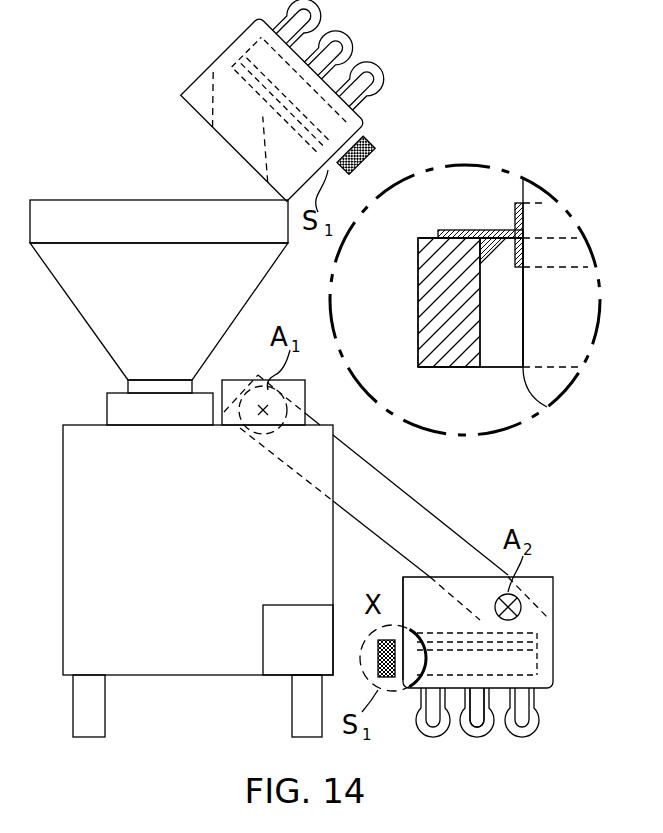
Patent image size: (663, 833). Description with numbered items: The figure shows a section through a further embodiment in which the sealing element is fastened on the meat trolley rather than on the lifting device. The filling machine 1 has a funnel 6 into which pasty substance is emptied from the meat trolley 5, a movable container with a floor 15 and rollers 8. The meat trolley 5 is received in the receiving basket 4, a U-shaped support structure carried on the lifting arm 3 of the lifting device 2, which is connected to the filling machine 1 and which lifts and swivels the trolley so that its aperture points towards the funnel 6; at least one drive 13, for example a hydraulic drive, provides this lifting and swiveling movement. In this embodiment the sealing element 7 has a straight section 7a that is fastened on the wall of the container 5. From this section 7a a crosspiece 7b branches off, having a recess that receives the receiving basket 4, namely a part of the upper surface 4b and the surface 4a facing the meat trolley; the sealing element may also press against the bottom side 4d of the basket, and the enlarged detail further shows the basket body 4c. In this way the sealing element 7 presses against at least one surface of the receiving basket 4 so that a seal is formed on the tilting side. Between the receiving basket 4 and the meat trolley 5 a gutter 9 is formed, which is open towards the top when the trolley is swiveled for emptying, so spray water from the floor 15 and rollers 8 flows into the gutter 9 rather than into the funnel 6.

The filling machine 1 is at (88, 186).
The lifting device 2 is at (437, 522).
The lifting arm 3 is at (382, 529).
The receiving basket 4 is at (398, 692).
The side surface of receiving basket 4a is at (481, 305).
The upper surface of receiving basket 4b is at (445, 232).
The sealing element body 4c is at (416, 307).
The bottom side of receiving basket 4d is at (466, 368).
The meat trolley 5 is at (230, 140).
The funnel 6 is at (74, 307).
The sealing element 7 is at (402, 615).
The straight section 7a is at (525, 258).
The crosspiece 7b is at (500, 231).
The rollers 8 is at (430, 742).
The gutter 9 is at (495, 281).
The drive 13 is at (288, 652).
The floor 15 is at (493, 700).